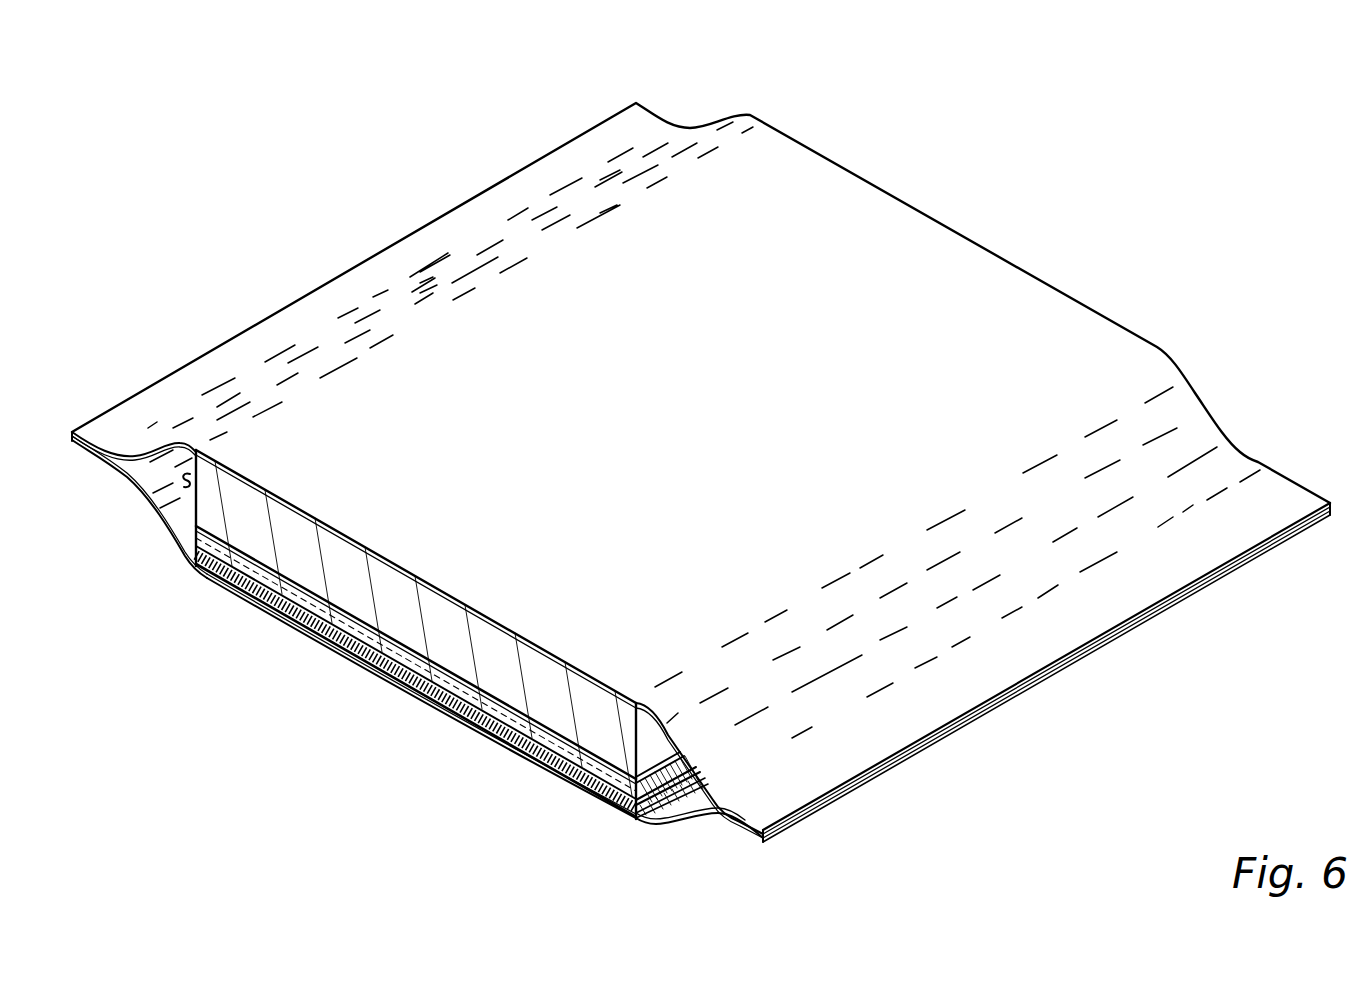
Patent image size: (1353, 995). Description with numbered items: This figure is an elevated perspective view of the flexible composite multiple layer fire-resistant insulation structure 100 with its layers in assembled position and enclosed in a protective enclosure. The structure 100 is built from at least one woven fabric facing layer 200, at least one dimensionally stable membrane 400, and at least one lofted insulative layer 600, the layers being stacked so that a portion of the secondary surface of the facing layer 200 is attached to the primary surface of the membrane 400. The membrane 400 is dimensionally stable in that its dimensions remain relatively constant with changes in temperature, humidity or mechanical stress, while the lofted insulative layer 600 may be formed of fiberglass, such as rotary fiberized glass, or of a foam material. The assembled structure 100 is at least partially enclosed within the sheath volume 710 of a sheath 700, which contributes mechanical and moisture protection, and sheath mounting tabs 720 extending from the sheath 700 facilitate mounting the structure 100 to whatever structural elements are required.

The sheath 700 is at (935, 219).
The sheath volume 710 is at (184, 481).
The sheath mounting tabs 720 is at (1084, 649).
The flexible composite multiple layer fire-resistant insulation structure 100 is at (191, 504).
The woven fabric facing layer 200 is at (196, 560).
The dimensionally stable membrane 400 is at (628, 810).
The lofted insulative layer 600 is at (652, 762).